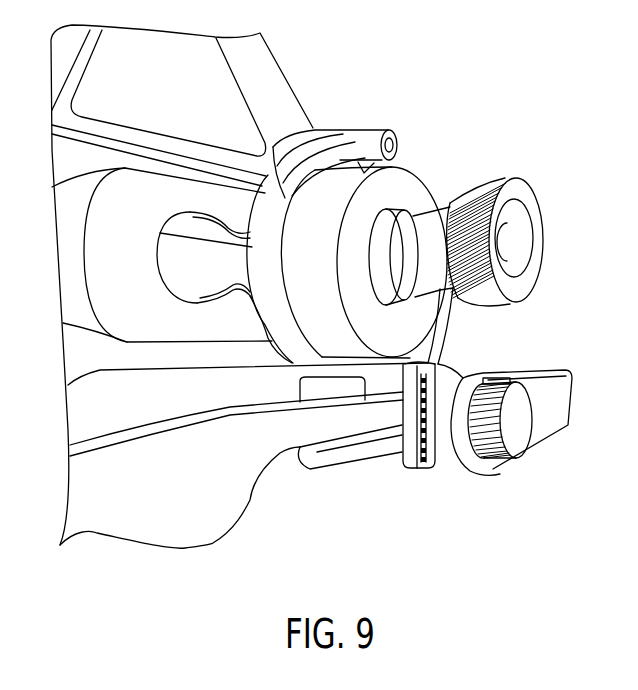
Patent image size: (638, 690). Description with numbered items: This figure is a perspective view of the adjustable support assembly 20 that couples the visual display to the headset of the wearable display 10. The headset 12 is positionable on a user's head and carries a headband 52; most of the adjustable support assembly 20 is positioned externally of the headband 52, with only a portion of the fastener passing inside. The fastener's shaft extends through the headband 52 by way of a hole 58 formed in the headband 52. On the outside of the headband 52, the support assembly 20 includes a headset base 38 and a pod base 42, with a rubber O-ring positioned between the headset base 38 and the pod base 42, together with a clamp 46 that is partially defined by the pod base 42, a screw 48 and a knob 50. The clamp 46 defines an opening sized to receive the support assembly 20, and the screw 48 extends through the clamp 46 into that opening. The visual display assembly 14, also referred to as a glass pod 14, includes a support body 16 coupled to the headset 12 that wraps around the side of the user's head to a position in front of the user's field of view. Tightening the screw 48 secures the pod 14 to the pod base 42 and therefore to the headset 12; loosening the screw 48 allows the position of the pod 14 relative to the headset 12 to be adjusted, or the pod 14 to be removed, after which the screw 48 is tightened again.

The wearable display 10 is at (535, 132).
The headset 12 is at (312, 88).
The visual display assembly 14 is at (542, 360).
The support body 16 is at (536, 443).
The adjustable support assembly 20 is at (478, 134).
The headset base 38 is at (245, 134).
The pod base 42 is at (423, 157).
The clamp 46 is at (396, 477).
The screw 48 is at (492, 473).
The knob 50 is at (548, 217).
The headband 52 is at (93, 265).
The hole 58 is at (173, 249).